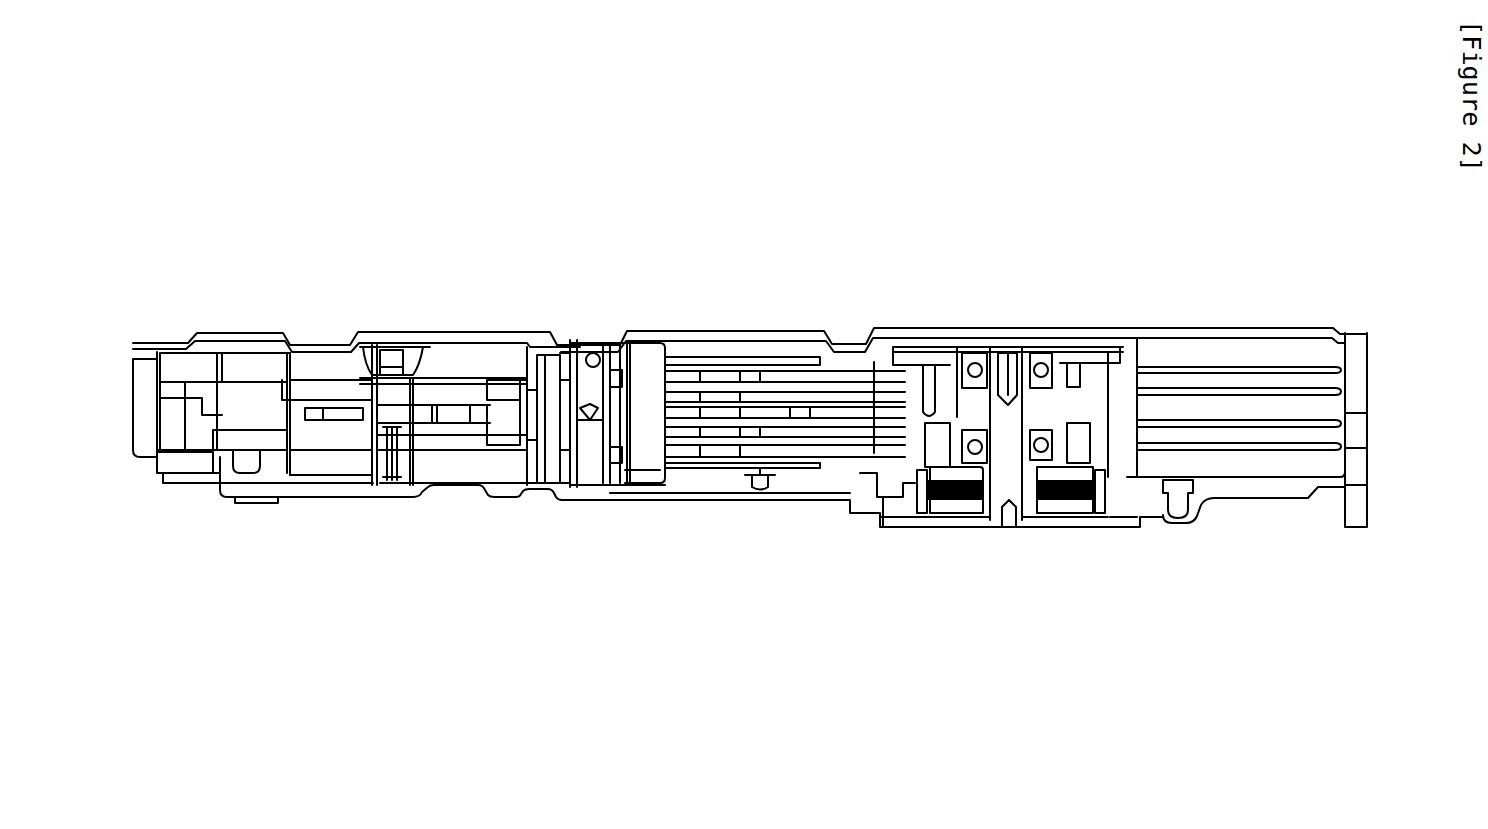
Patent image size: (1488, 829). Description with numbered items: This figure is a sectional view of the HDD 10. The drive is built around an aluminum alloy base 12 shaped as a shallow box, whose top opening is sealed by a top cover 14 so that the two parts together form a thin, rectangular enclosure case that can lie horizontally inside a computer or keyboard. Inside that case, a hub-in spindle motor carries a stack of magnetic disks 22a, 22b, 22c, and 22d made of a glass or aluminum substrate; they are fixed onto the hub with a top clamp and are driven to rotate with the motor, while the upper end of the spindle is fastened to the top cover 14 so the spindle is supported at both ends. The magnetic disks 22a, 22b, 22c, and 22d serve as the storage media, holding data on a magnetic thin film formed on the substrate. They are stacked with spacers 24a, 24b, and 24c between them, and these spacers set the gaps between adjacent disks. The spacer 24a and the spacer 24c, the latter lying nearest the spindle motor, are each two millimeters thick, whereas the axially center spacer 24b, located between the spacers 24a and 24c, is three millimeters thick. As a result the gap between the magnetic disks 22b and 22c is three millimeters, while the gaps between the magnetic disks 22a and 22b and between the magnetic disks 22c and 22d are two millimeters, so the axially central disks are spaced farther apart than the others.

The HDD 10 is at (727, 317).
The base 12 is at (1106, 530).
The top cover 14 is at (1068, 328).
The magnetic disk 22a is at (840, 363).
The magnetic disk 22b is at (877, 362).
The magnetic disk 22c is at (870, 458).
The magnetic disk 22d is at (837, 452).
The spacer 24a is at (1128, 378).
The spacer 24b is at (1128, 410).
The spacer 24c is at (1127, 437).